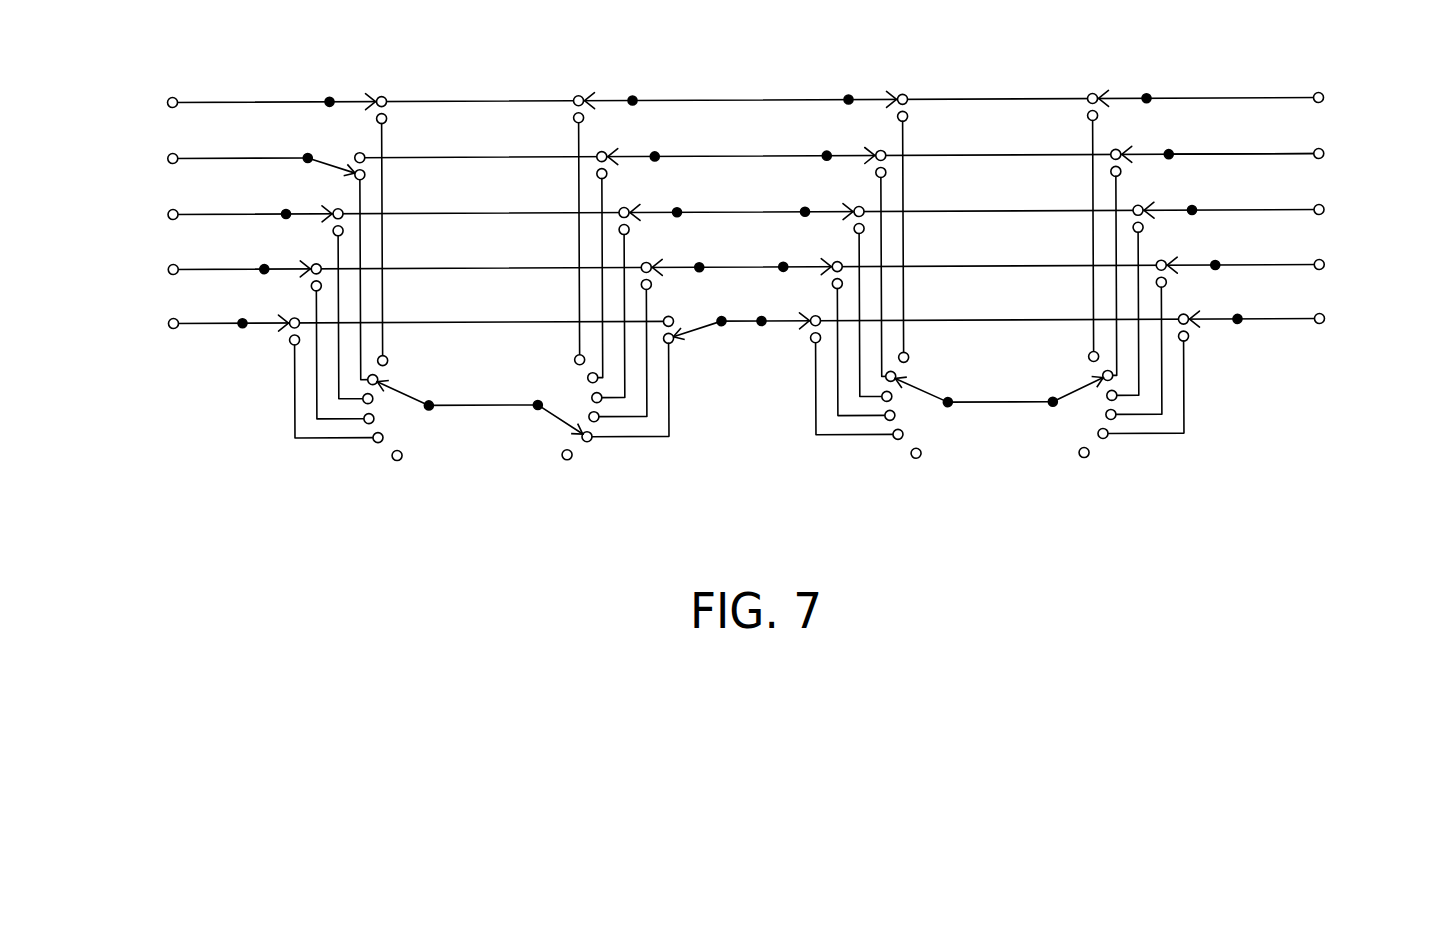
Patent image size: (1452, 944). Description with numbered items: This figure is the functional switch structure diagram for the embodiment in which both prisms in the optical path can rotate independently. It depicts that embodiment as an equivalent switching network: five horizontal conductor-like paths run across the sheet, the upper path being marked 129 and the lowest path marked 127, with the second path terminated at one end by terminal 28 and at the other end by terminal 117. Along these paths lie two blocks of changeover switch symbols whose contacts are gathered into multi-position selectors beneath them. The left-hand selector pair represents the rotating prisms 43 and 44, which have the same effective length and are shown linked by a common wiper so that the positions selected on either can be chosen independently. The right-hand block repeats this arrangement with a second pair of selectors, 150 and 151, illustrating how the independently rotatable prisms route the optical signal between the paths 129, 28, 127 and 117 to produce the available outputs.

The conductor line 129 is at (168, 100).
The terminal 28 is at (168, 156).
The conductor line 127 is at (168, 321).
The terminal 117 is at (1324, 154).
The prism 43 is at (403, 397).
The prism 44 is at (557, 422).
The rotary switch 150 is at (927, 390).
The rotary switch 151 is at (1075, 397).